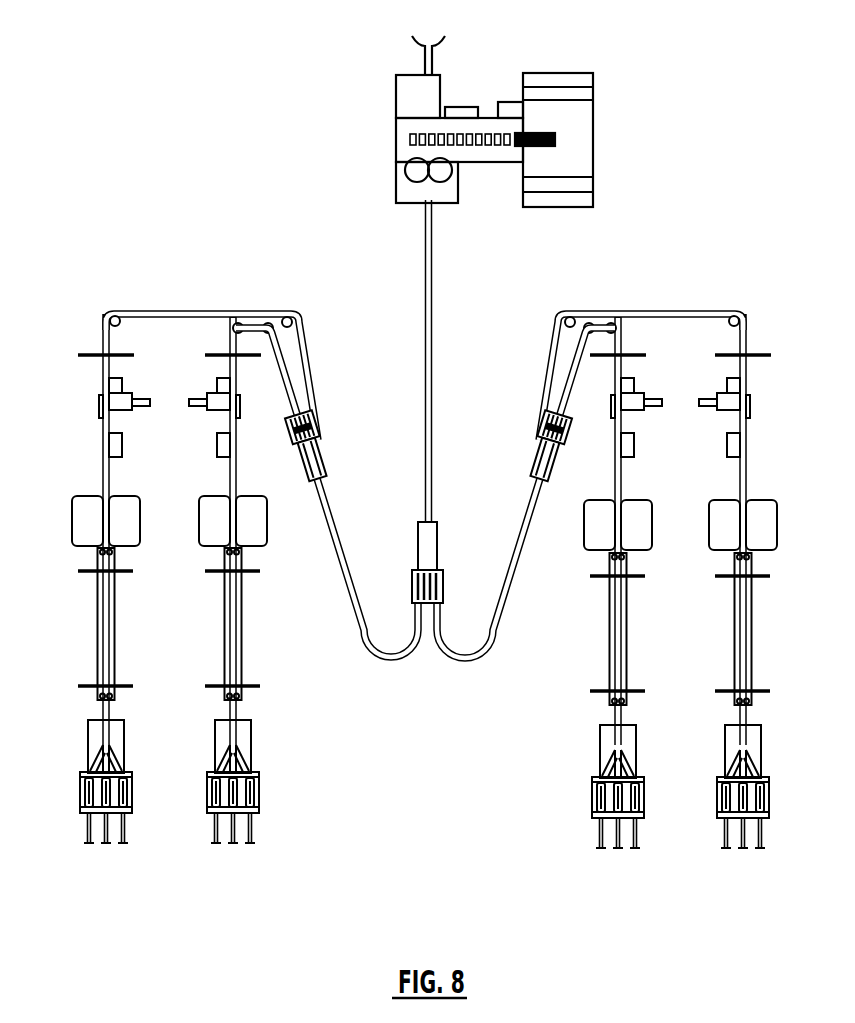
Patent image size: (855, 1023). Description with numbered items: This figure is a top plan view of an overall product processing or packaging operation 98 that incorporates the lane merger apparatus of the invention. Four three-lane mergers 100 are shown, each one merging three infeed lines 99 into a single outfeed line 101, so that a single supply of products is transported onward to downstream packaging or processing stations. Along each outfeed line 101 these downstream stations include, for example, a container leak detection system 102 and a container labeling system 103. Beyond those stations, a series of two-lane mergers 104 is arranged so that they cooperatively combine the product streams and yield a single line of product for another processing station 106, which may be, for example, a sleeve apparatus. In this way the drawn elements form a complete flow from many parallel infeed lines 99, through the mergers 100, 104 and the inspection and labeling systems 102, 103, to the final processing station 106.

The product processing or packaging operation 98 is at (228, 117).
The infeed lines 99 is at (210, 814).
The 3-lane merger 100 is at (262, 797).
The outfeed line 101 is at (236, 737).
The container leak detection system 102 is at (91, 635).
The container labeling system 103 is at (86, 402).
The 2-lane mergers 104 is at (334, 422).
The processing station 106 is at (388, 146).